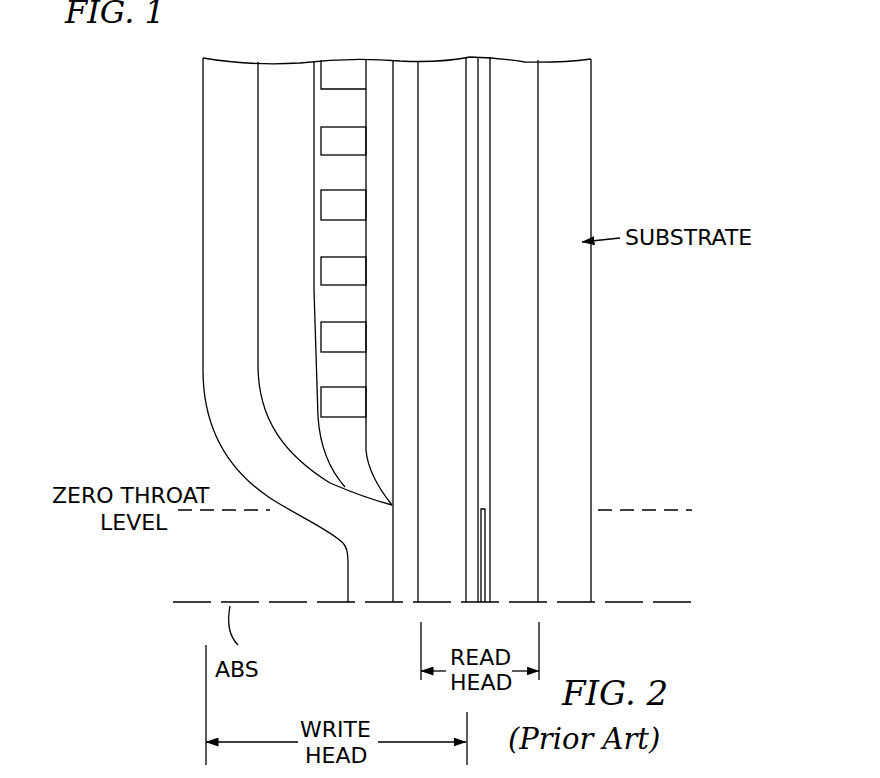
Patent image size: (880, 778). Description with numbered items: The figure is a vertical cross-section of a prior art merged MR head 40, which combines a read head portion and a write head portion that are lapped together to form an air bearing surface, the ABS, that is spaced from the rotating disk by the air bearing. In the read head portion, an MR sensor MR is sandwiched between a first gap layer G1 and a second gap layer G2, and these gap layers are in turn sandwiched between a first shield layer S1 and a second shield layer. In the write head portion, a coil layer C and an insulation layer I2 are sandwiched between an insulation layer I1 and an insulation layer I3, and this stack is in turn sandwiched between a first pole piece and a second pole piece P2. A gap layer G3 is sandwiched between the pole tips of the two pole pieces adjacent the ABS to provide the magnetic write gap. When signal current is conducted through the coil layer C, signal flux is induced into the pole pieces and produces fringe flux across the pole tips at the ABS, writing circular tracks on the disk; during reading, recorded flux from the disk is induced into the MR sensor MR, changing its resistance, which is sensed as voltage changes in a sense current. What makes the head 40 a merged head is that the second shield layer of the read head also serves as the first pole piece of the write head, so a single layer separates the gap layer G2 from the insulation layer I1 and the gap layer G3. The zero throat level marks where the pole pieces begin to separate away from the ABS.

The merged MR head 40 is at (622, 80).
The second pole piece P2 is at (275, 330).
The third insulation layer I3 is at (325, 283).
The second insulation layer I2 is at (353, 282).
The first insulation layer I1 is at (383, 331).
The coil layer C is at (343, 238).
The gap layer G3 is at (405, 55).
The second gap layer G2 is at (472, 53).
The MR sensor MR is at (481, 580).
The first gap layer G1 is at (491, 53).
The first shield layer S1 is at (520, 331).